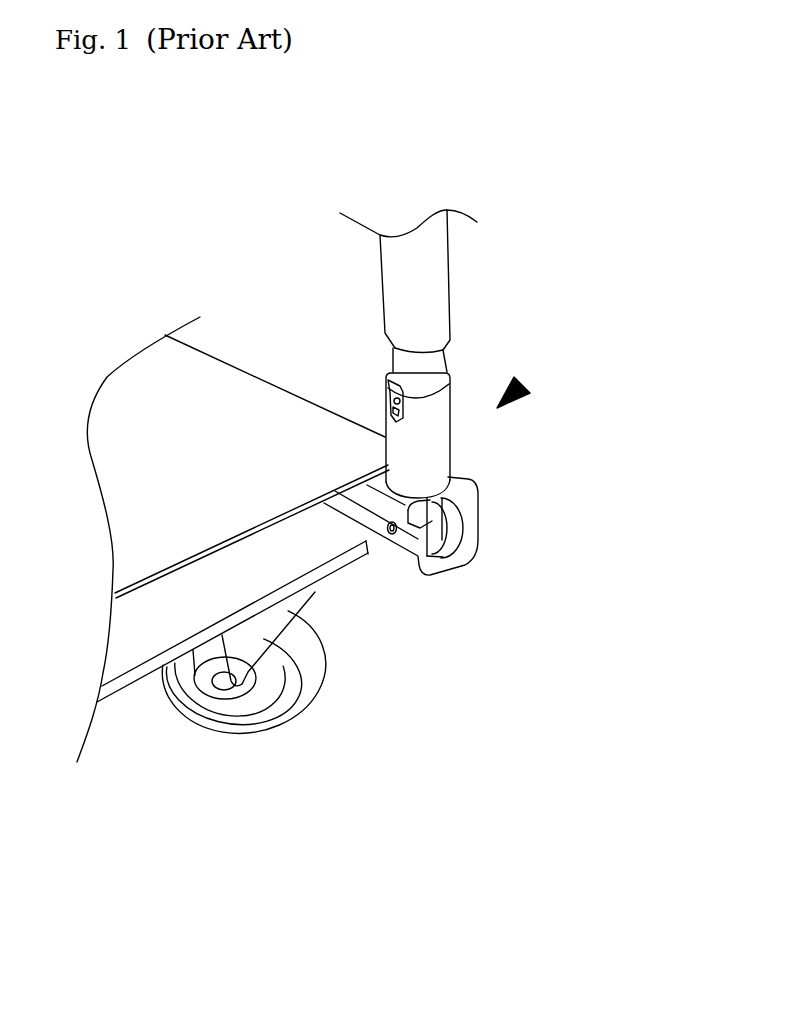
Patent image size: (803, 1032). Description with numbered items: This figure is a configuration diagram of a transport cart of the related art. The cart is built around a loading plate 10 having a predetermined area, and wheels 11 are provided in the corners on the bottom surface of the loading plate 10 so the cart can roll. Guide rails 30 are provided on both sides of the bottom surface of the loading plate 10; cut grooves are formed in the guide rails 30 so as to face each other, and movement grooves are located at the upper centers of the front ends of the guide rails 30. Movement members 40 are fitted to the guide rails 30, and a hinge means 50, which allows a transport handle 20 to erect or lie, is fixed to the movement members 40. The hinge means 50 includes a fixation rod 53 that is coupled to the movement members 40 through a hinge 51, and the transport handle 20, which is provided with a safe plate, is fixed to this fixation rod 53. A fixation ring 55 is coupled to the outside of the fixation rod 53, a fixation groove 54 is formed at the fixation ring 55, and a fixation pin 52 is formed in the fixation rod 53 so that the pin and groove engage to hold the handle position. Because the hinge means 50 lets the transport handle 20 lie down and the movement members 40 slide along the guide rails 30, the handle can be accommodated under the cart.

The loading plate 10 is at (222, 407).
The wheels 11 is at (273, 693).
The transport handle 20 is at (428, 263).
The guide rails 30 is at (473, 540).
The movement members 40 is at (432, 556).
The hinge means 50 is at (530, 383).
The hinge 51 is at (393, 535).
The fixation pin 52 is at (388, 368).
The fixation rod 53 is at (425, 369).
The fixation groove 54 is at (405, 420).
The fixation ring 55 is at (428, 437).